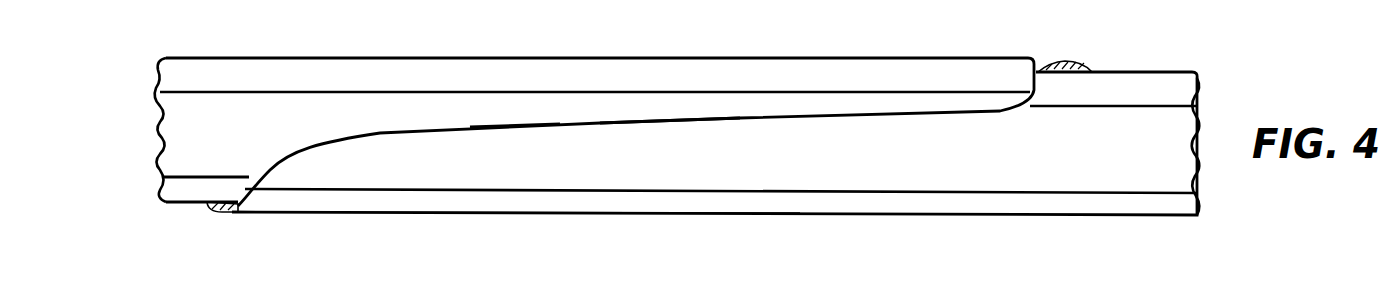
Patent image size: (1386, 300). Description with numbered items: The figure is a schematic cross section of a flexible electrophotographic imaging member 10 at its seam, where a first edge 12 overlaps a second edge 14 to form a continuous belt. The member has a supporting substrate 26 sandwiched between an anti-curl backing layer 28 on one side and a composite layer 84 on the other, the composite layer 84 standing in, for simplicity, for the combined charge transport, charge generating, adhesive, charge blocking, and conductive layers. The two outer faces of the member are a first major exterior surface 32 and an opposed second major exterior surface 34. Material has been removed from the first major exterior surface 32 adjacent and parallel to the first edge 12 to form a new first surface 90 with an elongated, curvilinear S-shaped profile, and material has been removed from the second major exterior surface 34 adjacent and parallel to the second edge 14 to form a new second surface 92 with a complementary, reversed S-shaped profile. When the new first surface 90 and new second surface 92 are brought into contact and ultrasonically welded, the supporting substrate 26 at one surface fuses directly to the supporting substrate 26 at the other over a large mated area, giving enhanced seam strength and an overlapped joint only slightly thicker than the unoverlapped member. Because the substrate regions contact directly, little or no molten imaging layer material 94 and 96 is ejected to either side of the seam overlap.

The flexible electrophotographic imaging member 10 is at (1120, 48).
The first edge 12 is at (720, 45).
The second edge 14 is at (458, 232).
The supporting substrate 26 is at (178, 138).
The anti-curl backing layer 28 is at (1163, 207).
The first major exterior surface 32 is at (185, 203).
The second major exterior surface 34 is at (412, 57).
The composite layer 84 is at (1163, 90).
The new first surface 90 is at (512, 125).
The new second surface 92 is at (650, 124).
The molten mixture of imaging layer material 94 is at (1058, 60).
The molten mixture of imaging layer material 96 is at (226, 207).